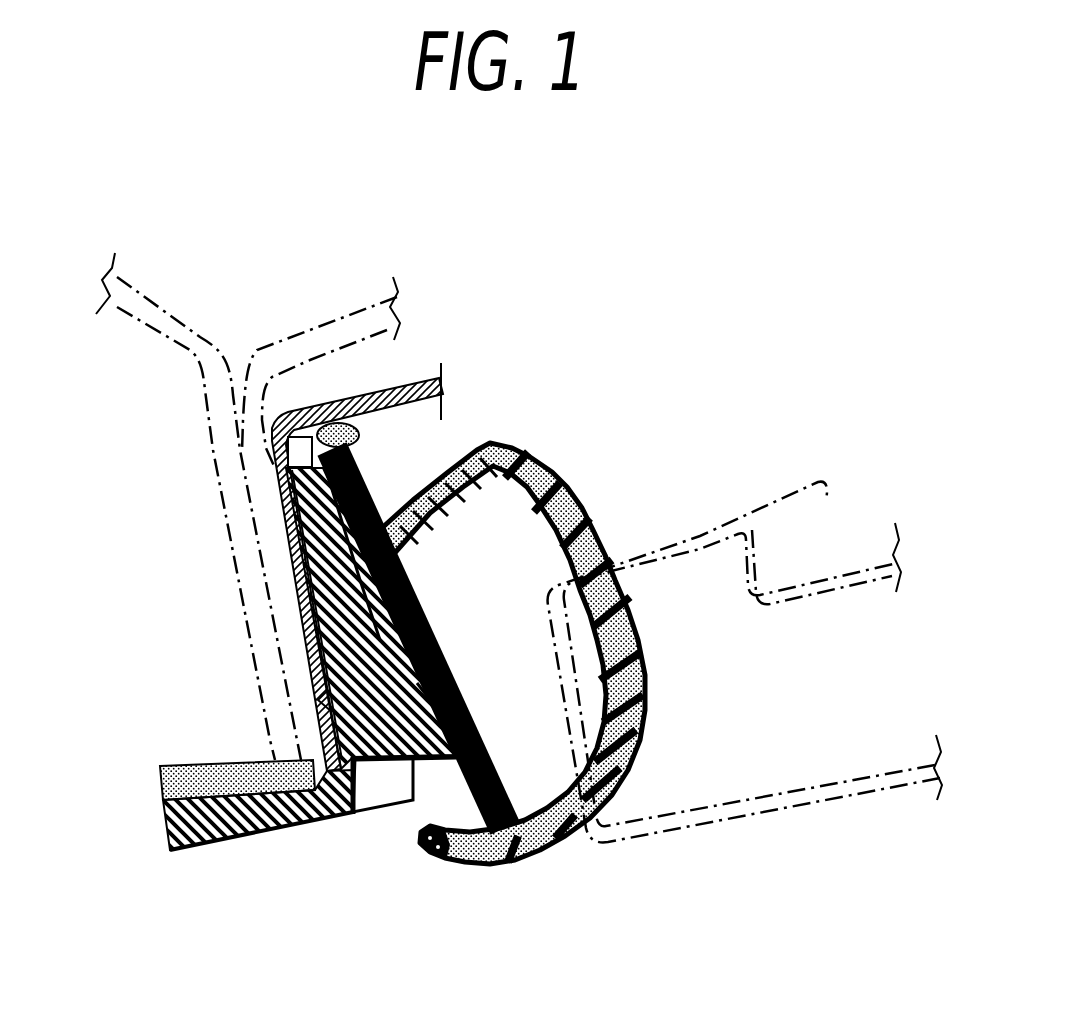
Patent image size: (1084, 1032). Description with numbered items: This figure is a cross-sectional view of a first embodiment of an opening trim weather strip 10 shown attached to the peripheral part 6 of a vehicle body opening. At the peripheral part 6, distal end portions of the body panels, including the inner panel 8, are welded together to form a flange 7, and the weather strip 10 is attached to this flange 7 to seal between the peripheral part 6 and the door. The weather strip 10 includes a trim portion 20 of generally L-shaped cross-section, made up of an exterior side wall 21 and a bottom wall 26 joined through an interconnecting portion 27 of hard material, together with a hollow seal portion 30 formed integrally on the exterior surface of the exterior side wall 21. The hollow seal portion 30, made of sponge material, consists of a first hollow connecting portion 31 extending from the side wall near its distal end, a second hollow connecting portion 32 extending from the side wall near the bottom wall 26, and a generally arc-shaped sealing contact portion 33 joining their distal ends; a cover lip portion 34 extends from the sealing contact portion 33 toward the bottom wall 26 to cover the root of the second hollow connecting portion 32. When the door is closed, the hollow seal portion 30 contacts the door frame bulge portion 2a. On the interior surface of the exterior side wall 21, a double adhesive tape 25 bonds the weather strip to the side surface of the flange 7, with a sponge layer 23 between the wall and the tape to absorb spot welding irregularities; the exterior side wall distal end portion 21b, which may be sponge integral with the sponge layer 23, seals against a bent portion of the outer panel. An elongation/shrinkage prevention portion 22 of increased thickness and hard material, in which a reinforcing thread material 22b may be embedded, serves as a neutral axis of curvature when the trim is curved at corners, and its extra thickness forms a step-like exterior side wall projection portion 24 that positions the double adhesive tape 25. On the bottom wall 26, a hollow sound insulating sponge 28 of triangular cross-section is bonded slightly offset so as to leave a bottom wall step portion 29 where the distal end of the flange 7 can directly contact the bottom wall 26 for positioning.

The door frame bulge portion 2a is at (775, 820).
The peripheral part 6 is at (407, 380).
The flange 7 is at (305, 332).
The inner panel 8 is at (190, 383).
The opening trim weather strip 10 is at (698, 716).
The trim portion 20 is at (300, 817).
The exterior side wall 21 is at (293, 607).
The exterior side wall distal end portion 21b is at (280, 443).
The elongation/shrinkage prevention portion 22 is at (425, 730).
The reinforcing thread material 22b is at (417, 683).
The sponge layer 23 is at (287, 540).
The exterior side wall projection portion 24 is at (313, 687).
The double adhesive tape 25 is at (280, 497).
The bottom wall 26 is at (223, 847).
The interconnecting portion 27 is at (383, 813).
The sound insulating sponge 28 is at (157, 790).
The bottom wall step portion 29 is at (347, 823).
The hollow seal portion 30 is at (571, 661).
The first hollow connecting portion 31 is at (427, 493).
The second hollow connecting portion 32 is at (503, 783).
The sealing contact portion 33 is at (643, 660).
The cover lip portion 34 is at (450, 867).